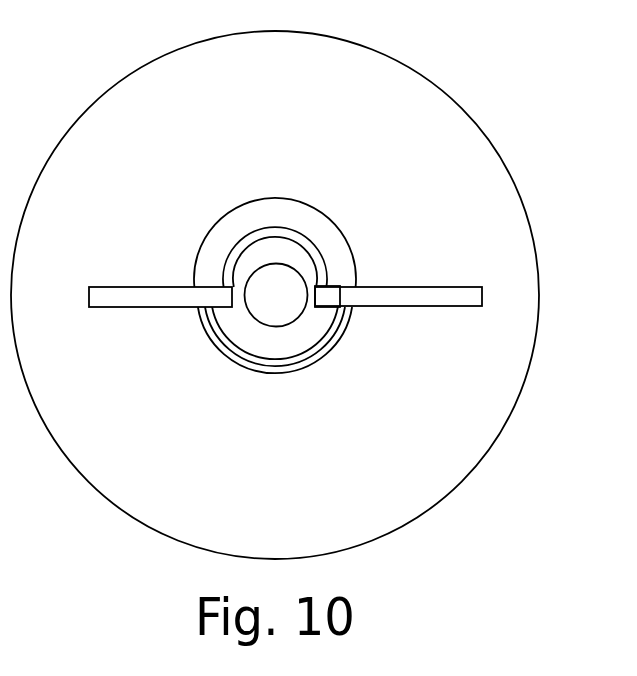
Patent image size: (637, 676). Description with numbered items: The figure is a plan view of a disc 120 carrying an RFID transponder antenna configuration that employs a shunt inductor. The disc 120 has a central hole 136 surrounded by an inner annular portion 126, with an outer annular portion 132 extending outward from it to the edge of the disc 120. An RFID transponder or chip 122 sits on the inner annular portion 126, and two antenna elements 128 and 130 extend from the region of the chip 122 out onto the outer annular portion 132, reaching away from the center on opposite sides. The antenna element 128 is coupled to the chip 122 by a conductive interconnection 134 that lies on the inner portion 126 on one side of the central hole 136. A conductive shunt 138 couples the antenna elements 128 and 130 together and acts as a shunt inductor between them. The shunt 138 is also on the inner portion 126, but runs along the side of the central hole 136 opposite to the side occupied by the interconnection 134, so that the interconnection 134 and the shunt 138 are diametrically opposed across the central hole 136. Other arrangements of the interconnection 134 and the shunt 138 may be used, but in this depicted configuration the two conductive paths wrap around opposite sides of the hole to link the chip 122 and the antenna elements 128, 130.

The disc 120 is at (420, 70).
The outer annular portion 132 is at (297, 131).
The inner annular portion 126 is at (293, 230).
The conductive interconnection 134 is at (306, 257).
The RFID transponder or chip 122 is at (327, 293).
The central hole 136 is at (301, 307).
The conductive shunt 138 is at (312, 355).
The antenna element 128 is at (135, 285).
The antenna element 130 is at (408, 287).